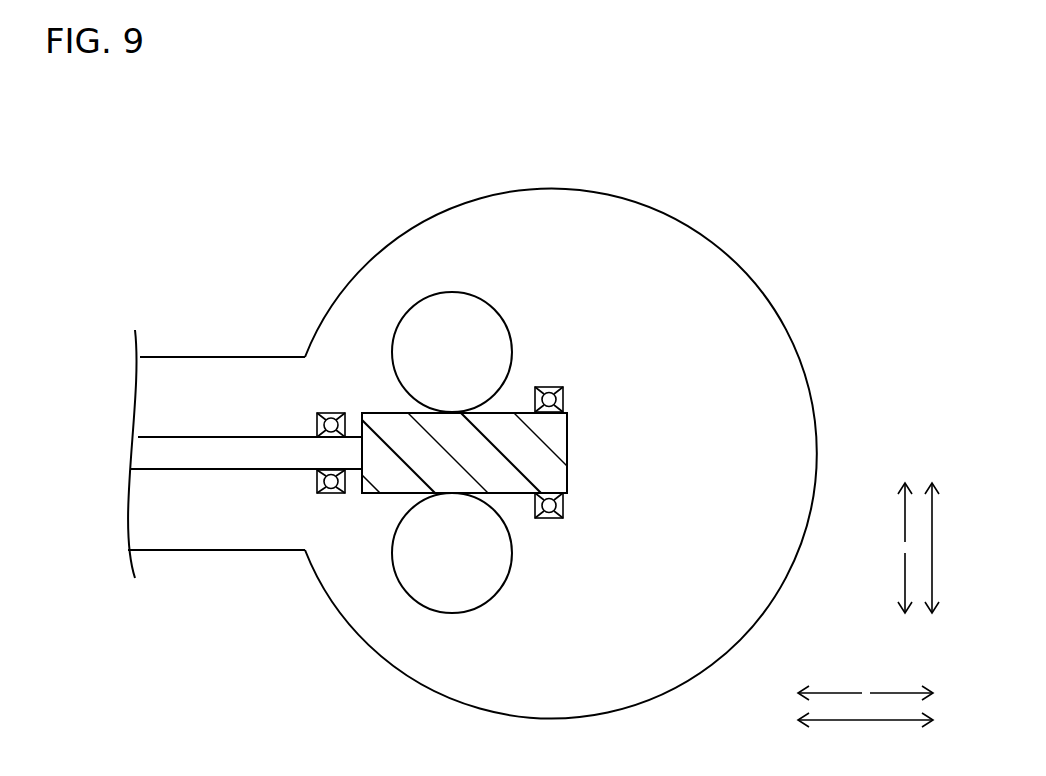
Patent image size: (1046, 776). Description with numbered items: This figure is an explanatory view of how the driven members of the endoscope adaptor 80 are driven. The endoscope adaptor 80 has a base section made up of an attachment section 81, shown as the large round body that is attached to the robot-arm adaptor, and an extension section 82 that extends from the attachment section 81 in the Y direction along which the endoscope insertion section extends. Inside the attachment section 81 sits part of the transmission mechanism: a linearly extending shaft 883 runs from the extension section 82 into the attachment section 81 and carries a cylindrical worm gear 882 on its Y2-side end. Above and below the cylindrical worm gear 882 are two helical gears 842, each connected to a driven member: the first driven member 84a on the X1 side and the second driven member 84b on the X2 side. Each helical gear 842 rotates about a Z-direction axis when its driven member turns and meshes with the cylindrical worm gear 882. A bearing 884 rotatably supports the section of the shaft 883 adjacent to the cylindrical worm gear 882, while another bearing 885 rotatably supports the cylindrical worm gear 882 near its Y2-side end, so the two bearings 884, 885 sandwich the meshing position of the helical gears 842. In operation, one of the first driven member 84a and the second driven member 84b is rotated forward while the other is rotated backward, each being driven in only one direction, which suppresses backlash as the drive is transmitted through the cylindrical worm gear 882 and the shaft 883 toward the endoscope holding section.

The endoscope adaptor 80 is at (757, 174).
The attachment section 81 is at (540, 194).
The extension section 82 is at (190, 366).
The helical gear 842 is at (520, 452).
The first driven member 84a is at (512, 350).
The second driven member 84b is at (512, 553).
The cylindrical worm gear 882 is at (568, 452).
The shaft 883 is at (197, 462).
The bearing 884 is at (329, 494).
The bearing 885 is at (564, 503).